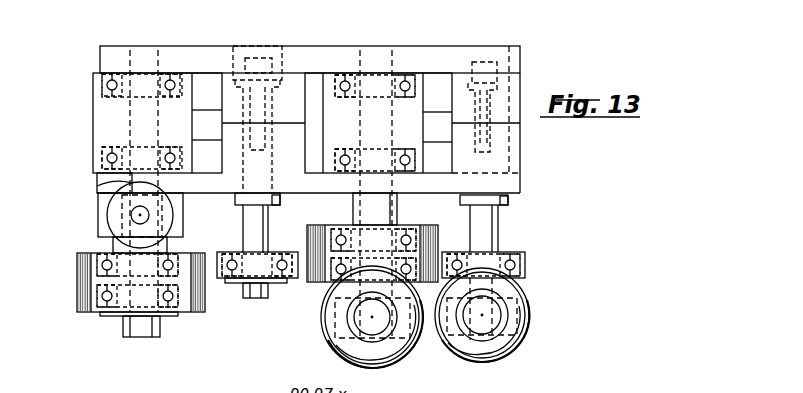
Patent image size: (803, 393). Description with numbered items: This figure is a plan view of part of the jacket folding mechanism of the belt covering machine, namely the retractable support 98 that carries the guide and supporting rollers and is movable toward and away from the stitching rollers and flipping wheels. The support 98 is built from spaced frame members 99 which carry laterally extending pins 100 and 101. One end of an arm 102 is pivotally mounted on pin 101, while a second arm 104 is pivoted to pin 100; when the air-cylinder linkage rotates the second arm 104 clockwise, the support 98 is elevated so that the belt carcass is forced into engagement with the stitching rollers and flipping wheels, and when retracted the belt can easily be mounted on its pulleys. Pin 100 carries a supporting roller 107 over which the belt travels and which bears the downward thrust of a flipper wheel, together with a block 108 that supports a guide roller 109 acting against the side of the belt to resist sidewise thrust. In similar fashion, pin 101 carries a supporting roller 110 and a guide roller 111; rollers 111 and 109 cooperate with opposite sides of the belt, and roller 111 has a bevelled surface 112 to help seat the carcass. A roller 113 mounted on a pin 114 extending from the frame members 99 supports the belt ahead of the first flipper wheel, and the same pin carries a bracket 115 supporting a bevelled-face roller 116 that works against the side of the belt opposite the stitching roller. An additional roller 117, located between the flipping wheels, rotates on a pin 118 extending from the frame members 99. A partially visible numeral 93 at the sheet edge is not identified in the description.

The support 98 is at (521, 46).
The frame members 99 is at (184, 54).
The pin 100 is at (97, 181).
The pin 101 is at (392, 192).
The arm 102 is at (423, 90).
The second arm 104 is at (93, 140).
The supporting roller 107 is at (73, 305).
The block 108 is at (97, 210).
The guide roller 109 is at (112, 225).
The supporting roller 110 is at (320, 232).
The guide roller 111 is at (340, 331).
The bevelled surface 112 is at (400, 362).
The roller 113 is at (507, 258).
The pin 114 is at (498, 220).
The bracket 115 is at (520, 292).
The roller 116 is at (527, 318).
The additional roller 117 is at (239, 284).
The pin 118 is at (268, 215).
The guide rail 93 is at (219, 386).